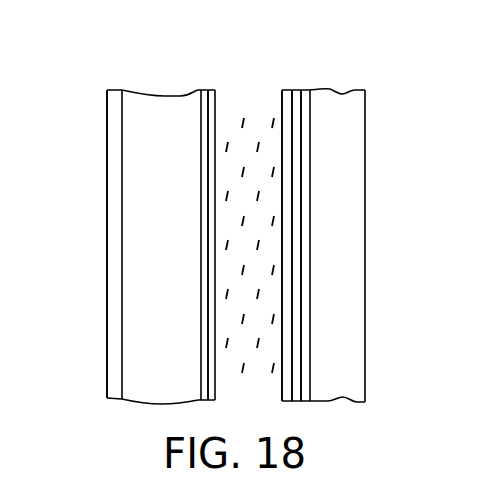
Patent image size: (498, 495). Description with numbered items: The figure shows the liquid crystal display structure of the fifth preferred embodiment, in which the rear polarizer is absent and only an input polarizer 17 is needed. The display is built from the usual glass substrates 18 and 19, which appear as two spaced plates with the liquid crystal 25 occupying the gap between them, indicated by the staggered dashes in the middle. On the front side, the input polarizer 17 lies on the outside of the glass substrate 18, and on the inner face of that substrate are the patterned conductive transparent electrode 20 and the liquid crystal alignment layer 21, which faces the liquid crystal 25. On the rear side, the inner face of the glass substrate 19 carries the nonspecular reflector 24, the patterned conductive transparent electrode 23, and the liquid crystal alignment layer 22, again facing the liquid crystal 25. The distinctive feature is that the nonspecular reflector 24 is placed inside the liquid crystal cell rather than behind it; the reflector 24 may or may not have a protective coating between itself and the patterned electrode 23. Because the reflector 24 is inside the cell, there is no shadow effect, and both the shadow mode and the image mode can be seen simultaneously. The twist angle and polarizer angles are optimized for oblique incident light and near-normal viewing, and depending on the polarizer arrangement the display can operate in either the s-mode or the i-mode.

The input polarizer 17 is at (107, 112).
The glass substrate 18 is at (118, 90).
The glass substrate 19 is at (366, 115).
The patterned conductive transparent electrode 20 is at (204, 90).
The liquid crystal alignment layer 21 is at (212, 90).
The liquid crystal alignment layer 22 is at (283, 90).
The patterned conductive transparent electrode 23 is at (296, 90).
The nonspecular reflector 24 is at (311, 90).
The liquid crystal 25 is at (250, 382).